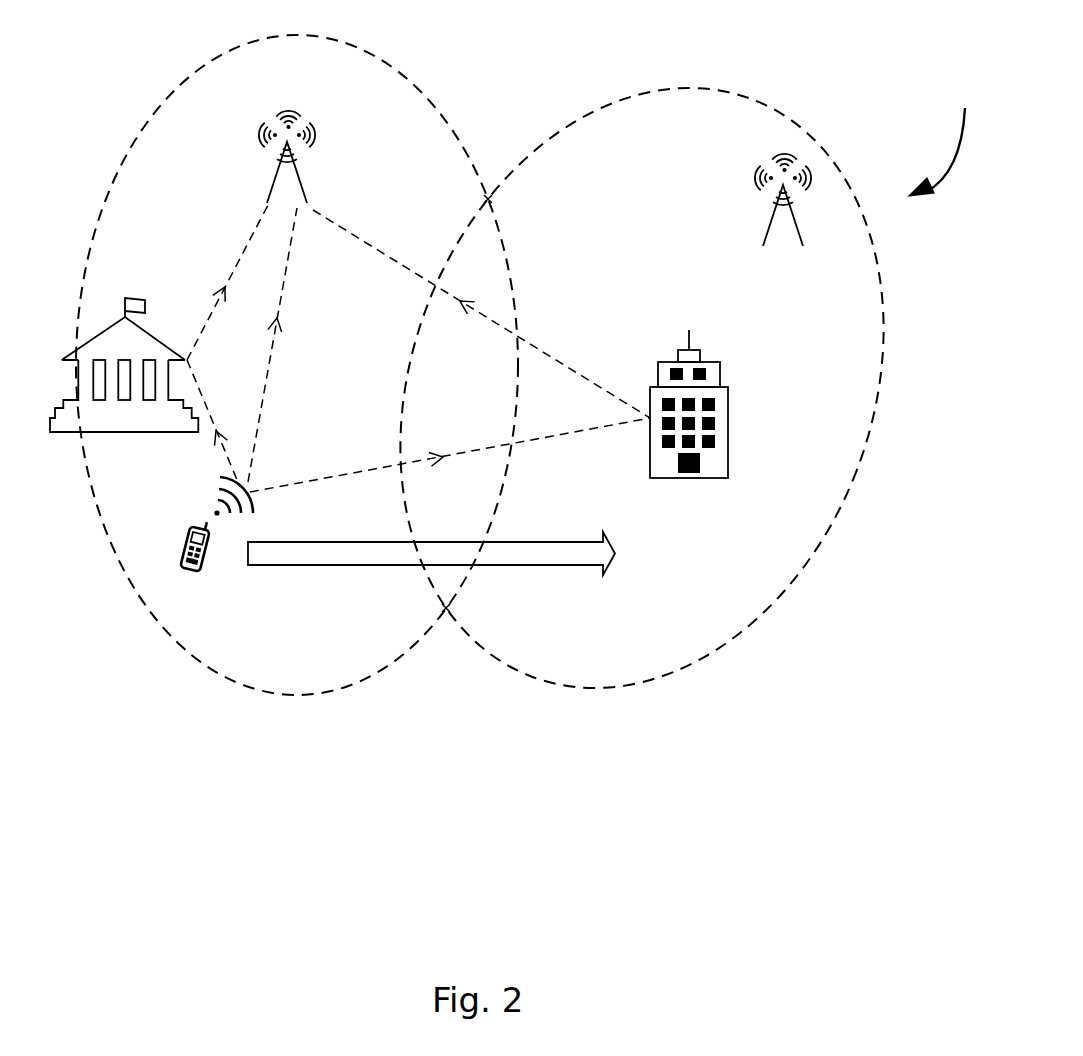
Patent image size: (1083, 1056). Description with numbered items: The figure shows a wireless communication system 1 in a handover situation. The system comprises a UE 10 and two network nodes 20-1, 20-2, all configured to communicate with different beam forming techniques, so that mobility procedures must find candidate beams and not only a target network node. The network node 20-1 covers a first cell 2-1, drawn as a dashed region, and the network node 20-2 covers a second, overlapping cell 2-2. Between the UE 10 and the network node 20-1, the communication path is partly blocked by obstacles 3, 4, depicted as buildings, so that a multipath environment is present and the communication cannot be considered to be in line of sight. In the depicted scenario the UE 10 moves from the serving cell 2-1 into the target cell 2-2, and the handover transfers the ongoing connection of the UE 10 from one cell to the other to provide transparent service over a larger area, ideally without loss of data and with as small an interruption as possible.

The wireless communication system 1 is at (939, 133).
The cell 2-1 is at (170, 97).
The cell 2-2 is at (633, 95).
The network node 20-1 is at (278, 172).
The network node 20-2 is at (770, 220).
The obstacle 3 is at (175, 432).
The obstacle 4 is at (713, 478).
The UE 10 is at (208, 549).